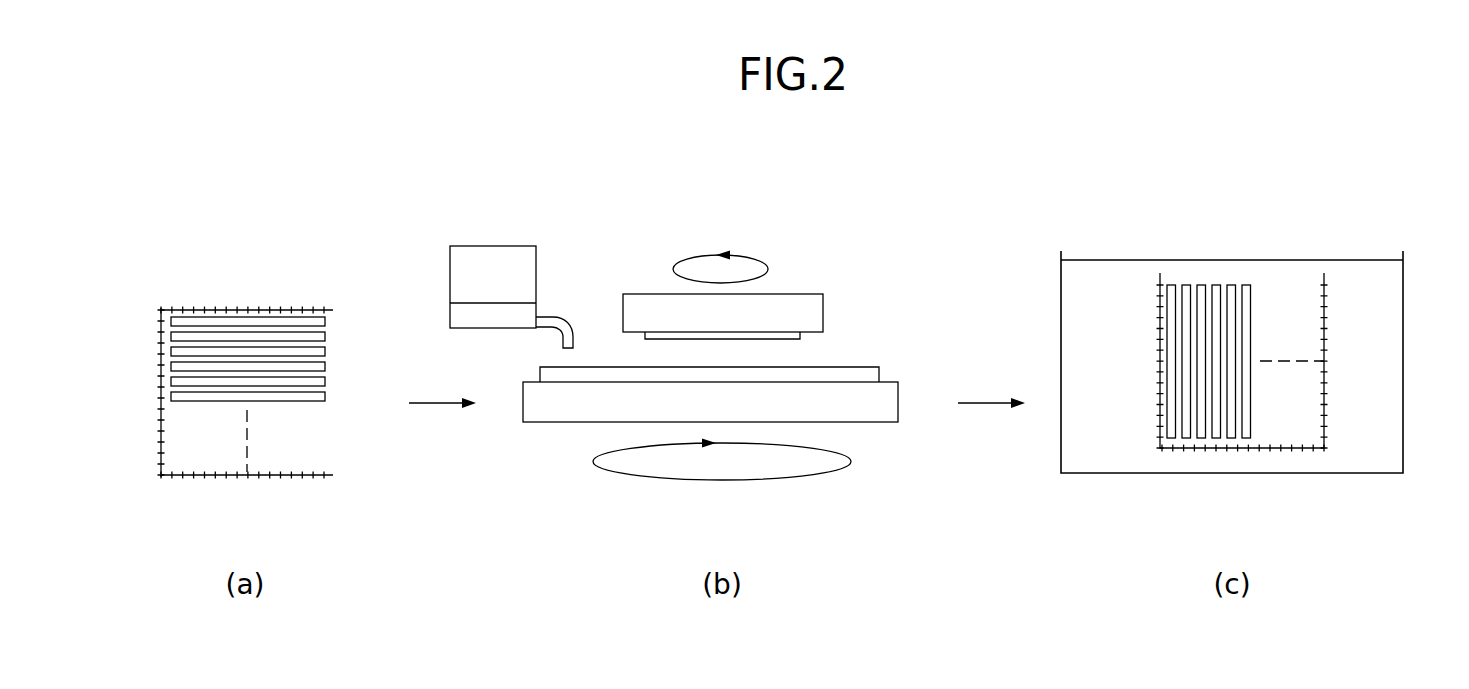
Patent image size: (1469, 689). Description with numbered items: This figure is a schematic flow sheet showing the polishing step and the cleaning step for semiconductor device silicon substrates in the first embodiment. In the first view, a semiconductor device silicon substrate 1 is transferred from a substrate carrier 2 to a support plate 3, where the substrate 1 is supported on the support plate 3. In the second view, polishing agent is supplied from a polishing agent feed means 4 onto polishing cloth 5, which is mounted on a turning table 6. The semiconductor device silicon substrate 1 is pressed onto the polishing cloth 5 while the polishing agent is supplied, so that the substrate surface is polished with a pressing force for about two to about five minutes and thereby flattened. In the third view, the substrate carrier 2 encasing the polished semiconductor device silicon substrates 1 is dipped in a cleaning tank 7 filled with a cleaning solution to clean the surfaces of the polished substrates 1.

The semiconductor device silicon substrate 1 is at (297, 402).
The substrate carrier 2 is at (250, 308).
The support plate 3 is at (802, 303).
The polishing agent feed means 4 is at (493, 246).
The polishing cloth 5 is at (880, 373).
The turning table 6 is at (876, 415).
The cleaning tank 7 is at (1405, 410).